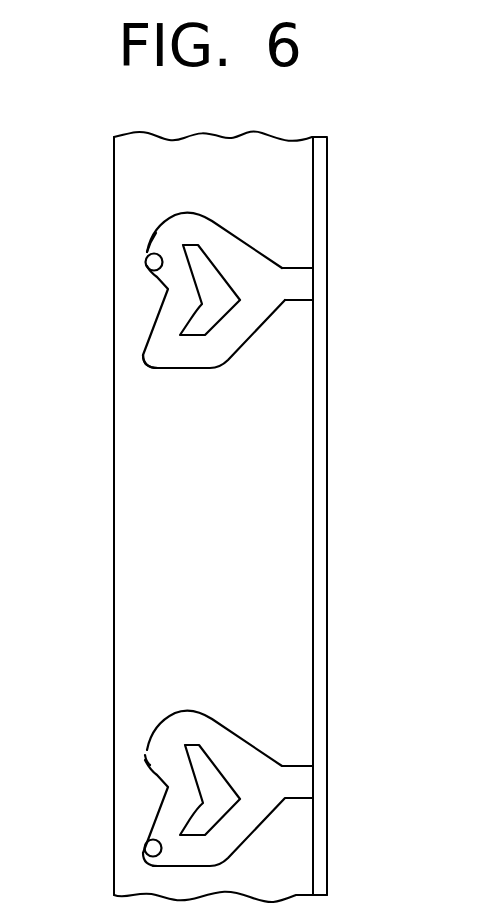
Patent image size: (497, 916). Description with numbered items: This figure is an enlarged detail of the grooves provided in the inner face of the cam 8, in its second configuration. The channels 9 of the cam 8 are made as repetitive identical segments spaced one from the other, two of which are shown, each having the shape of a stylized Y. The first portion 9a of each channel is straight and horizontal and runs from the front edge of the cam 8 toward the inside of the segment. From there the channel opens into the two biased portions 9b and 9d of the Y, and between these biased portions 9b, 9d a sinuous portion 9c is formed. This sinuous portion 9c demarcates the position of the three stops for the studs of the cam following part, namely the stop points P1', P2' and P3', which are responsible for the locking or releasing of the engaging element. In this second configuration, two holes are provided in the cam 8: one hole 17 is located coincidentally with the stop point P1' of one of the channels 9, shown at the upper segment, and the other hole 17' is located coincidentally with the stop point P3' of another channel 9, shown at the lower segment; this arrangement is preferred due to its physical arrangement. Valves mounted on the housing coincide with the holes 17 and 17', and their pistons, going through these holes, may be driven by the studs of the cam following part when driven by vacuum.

The cam 8 is at (280, 532).
The channels 9 is at (211, 530).
The first portion 9a is at (297, 284).
The biased portion 9b is at (250, 275).
The sinuous portion 9c is at (167, 302).
The biased portion 9d is at (241, 333).
The hole 17 is at (110, 258).
The hole 17' is at (105, 835).
The stop point P1' is at (103, 480).
The stop point P2' is at (282, 302).
The stop point P3' is at (104, 622).